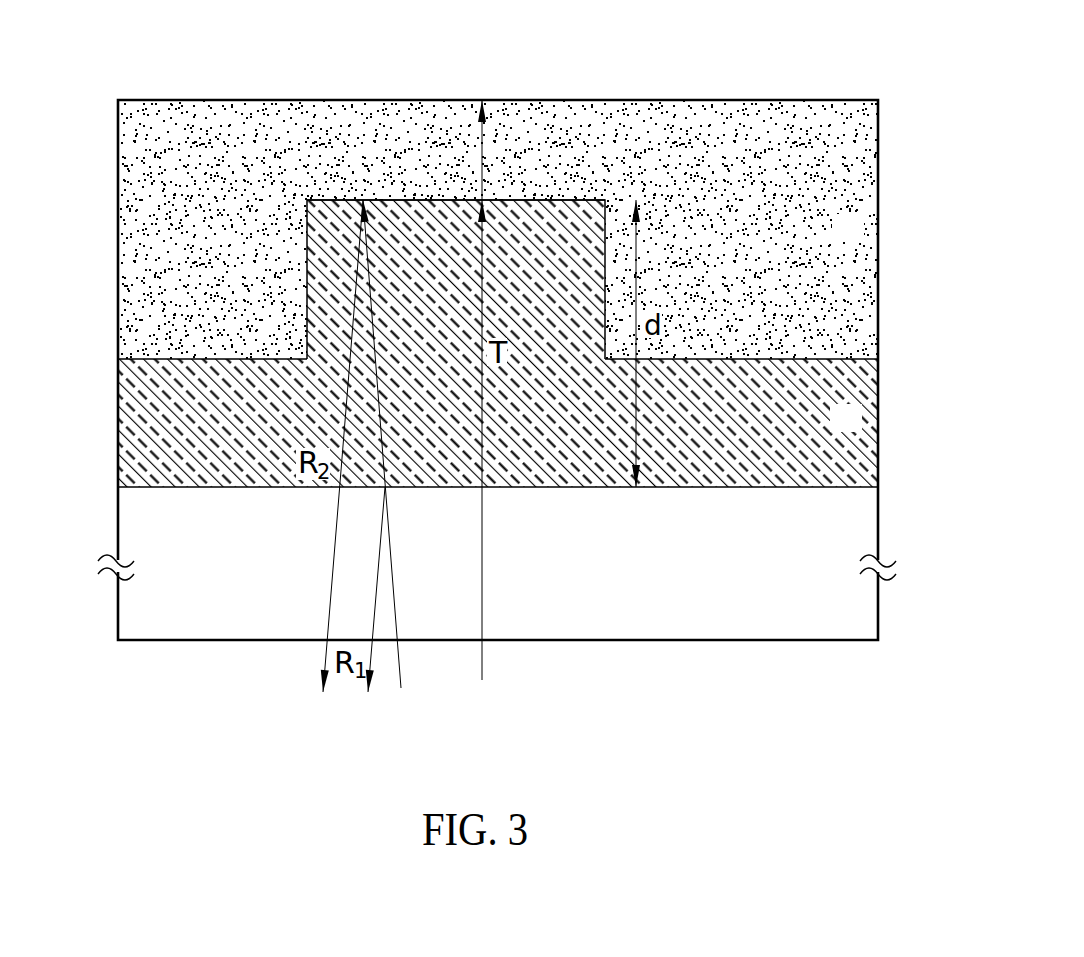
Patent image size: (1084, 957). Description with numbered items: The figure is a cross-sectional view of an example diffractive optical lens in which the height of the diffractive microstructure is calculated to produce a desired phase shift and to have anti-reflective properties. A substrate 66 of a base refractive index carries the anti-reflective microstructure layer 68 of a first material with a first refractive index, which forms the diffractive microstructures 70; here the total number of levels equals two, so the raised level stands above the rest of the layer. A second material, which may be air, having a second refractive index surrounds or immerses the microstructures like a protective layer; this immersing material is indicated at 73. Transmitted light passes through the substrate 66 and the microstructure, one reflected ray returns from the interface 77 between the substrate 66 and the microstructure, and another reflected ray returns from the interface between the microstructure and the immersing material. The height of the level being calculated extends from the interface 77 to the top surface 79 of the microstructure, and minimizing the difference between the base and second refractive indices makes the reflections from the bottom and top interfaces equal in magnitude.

The substrate 66 is at (128, 517).
The anti-reflective microstructure layer 68 is at (128, 418).
The diffractive microstructures 70 is at (438, 217).
The cladding layer (refractive index n2) 73 is at (872, 132).
The interface 77 is at (853, 488).
The top surface 79 is at (557, 198).